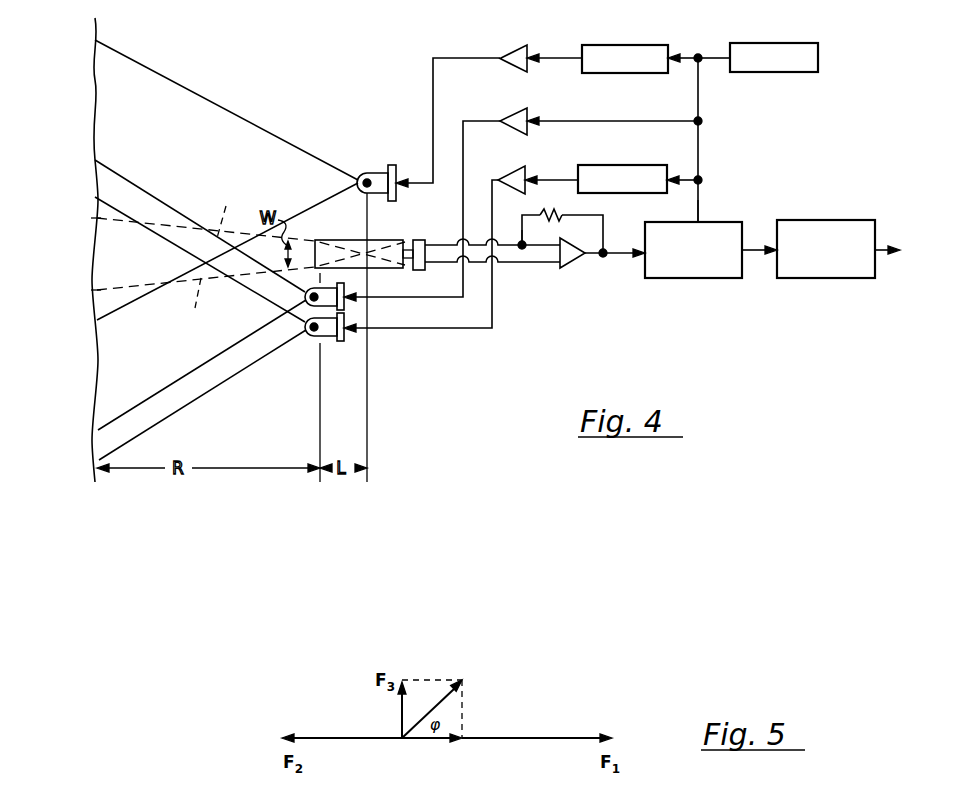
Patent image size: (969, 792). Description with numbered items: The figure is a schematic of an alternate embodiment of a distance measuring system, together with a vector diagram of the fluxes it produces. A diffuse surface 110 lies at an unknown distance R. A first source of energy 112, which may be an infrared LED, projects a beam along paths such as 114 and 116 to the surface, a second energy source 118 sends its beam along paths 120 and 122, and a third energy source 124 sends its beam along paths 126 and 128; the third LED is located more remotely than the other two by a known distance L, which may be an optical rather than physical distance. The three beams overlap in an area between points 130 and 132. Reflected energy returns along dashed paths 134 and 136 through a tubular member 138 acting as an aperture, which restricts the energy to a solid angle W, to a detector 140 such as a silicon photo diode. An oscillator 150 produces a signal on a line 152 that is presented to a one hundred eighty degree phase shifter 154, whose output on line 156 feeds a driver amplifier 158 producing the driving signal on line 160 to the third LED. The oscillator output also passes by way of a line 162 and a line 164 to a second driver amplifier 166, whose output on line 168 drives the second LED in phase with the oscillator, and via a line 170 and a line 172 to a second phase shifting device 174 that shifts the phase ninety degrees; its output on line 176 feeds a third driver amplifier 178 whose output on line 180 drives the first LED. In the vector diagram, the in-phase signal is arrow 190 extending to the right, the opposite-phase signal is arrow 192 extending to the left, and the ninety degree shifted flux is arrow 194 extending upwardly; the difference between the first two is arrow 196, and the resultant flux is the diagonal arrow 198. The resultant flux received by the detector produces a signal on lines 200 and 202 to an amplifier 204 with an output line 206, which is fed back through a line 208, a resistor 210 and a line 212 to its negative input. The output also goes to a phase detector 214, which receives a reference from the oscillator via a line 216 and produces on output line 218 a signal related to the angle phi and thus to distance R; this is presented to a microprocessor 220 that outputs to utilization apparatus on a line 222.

In FIG. 4, the diffuse surface 110 is at (97, 22).
In FIG. 4, the first source of energy 112 is at (325, 348).
In FIG. 4, the beam path 114 is at (258, 295).
In FIG. 4, the beam path 116 is at (214, 388).
In FIG. 4, the second energy source 118 is at (325, 278).
In FIG. 4, the beam path 120 is at (140, 187).
In FIG. 4, the beam path 122 is at (184, 373).
In FIG. 4, the third energy source 124 is at (375, 166).
In FIG. 4, the beam path 126 is at (207, 97).
In FIG. 4, the beam path 128 is at (312, 211).
In FIG. 4, the point 130 is at (97, 218).
In FIG. 4, the point 132 is at (95, 300).
In FIG. 4, the reflected energy path 134 is at (228, 209).
In FIG. 4, the reflected energy path 136 is at (196, 306).
In FIG. 4, the tubular member 138 is at (350, 240).
In FIG. 4, the detector 140 is at (410, 240).
In FIG. 4, the oscillator 150 is at (778, 43).
In FIG. 4, the line 152 is at (705, 57).
In FIG. 4, the 180 degrees phase shifter 154 is at (622, 45).
In FIG. 4, the line 156 is at (560, 58).
In FIG. 4, the driver amplifier 158 is at (505, 50).
In FIG. 4, the line 160 is at (438, 57).
In FIG. 4, the line 162 is at (700, 95).
In FIG. 4, the line 164 is at (592, 121).
In FIG. 4, the second driver amplifier 166 is at (503, 108).
In FIG. 4, the line 168 is at (464, 160).
In FIG. 4, the line 170 is at (700, 142).
In FIG. 4, the line 172 is at (688, 176).
In FIG. 4, the second phase shifting device 174 is at (588, 165).
In FIG. 4, the line 176 is at (560, 180).
In FIG. 4, the third driver amplifier 178 is at (509, 175).
In FIG. 4, the line 180 is at (462, 227).
In FIG. 5, the arrow 190 is at (546, 737).
In FIG. 5, the arrow 192 is at (322, 736).
In FIG. 5, the arrow 194 is at (400, 714).
In FIG. 5, the arrow 196 is at (433, 742).
In FIG. 5, the arrow 198 is at (437, 698).
In FIG. 4, the line 200 is at (508, 243).
In FIG. 4, the line 202 is at (506, 264).
In FIG. 4, the amplifier 204 is at (573, 270).
In FIG. 4, the output line 206 is at (603, 257).
In FIG. 4, the line 208 is at (610, 215).
In FIG. 4, the resistor 210 is at (560, 214).
In FIG. 4, the line 212 is at (527, 230).
In FIG. 4, the phase detector 214 is at (688, 278).
In FIG. 4, the line 216 is at (700, 208).
In FIG. 4, the output line 218 is at (752, 258).
In FIG. 4, the microprocessor 220 is at (812, 220).
In FIG. 4, the line 222 is at (884, 256).